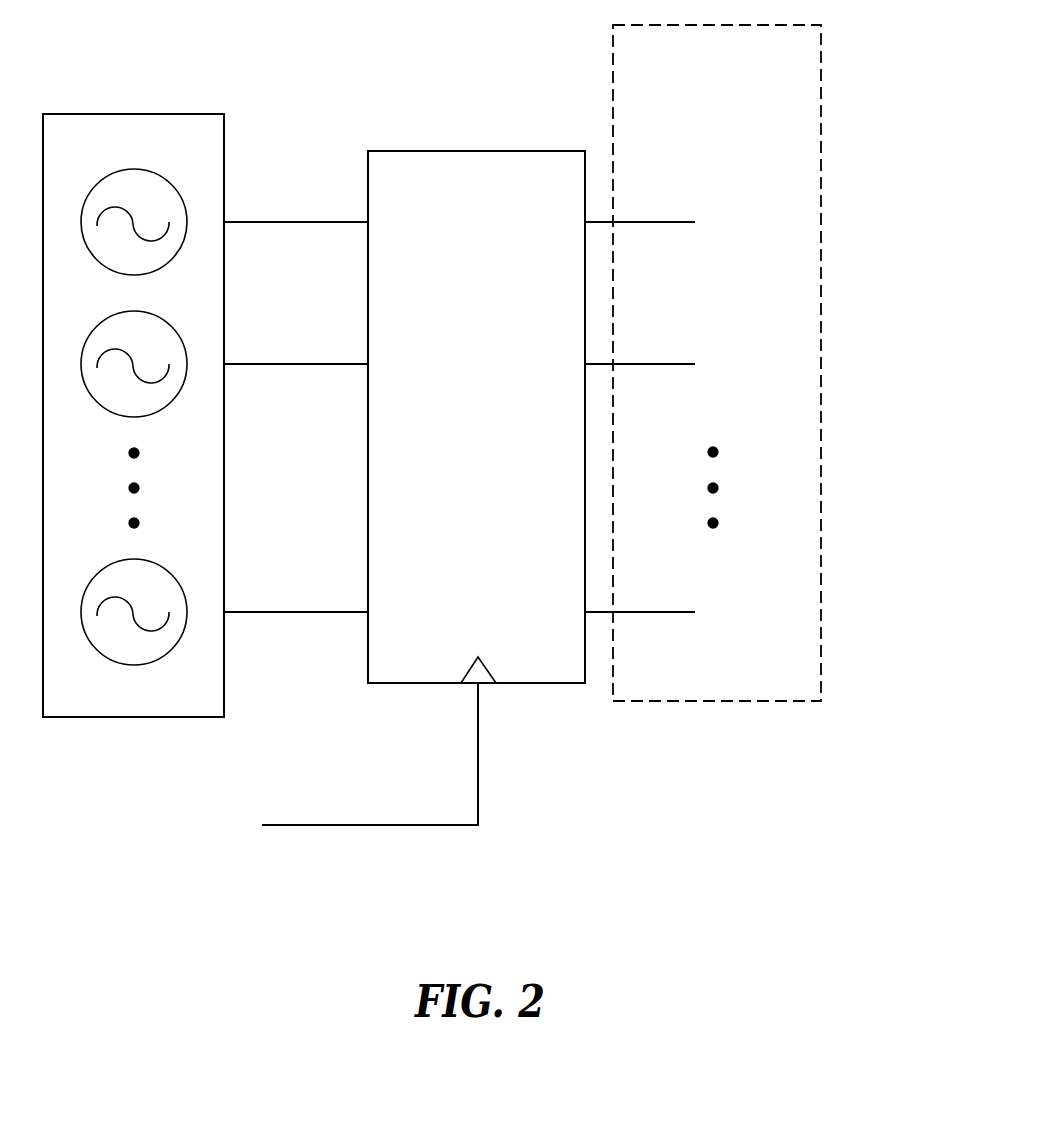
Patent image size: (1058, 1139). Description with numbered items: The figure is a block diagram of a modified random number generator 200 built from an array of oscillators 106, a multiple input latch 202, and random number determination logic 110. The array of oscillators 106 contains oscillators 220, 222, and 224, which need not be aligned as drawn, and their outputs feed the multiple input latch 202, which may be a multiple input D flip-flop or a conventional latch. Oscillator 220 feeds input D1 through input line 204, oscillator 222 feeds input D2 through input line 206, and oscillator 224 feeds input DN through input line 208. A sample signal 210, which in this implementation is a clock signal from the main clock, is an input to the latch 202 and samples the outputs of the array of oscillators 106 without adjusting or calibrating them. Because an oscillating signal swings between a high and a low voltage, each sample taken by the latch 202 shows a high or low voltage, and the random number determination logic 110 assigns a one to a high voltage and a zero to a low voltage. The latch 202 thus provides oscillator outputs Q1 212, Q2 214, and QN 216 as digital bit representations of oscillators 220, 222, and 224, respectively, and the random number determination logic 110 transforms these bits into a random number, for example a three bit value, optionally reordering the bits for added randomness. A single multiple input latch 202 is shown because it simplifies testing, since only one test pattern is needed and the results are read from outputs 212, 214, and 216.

The modified random number generator 200 is at (876, 85).
The array of oscillators 106 is at (115, 113).
The oscillator 220 is at (113, 170).
The oscillator 222 is at (118, 313).
The oscillator 224 is at (112, 567).
The multiple input latch 202 is at (445, 151).
The input line 204 is at (320, 221).
The input line 206 is at (320, 364).
The input line 208 is at (322, 612).
The sample signal 210 is at (370, 824).
The oscillator output Q1 212 is at (663, 221).
The oscillator output Q2 214 is at (665, 363).
The oscillator output QN 216 is at (665, 612).
The random number determination logic 110 is at (717, 363).